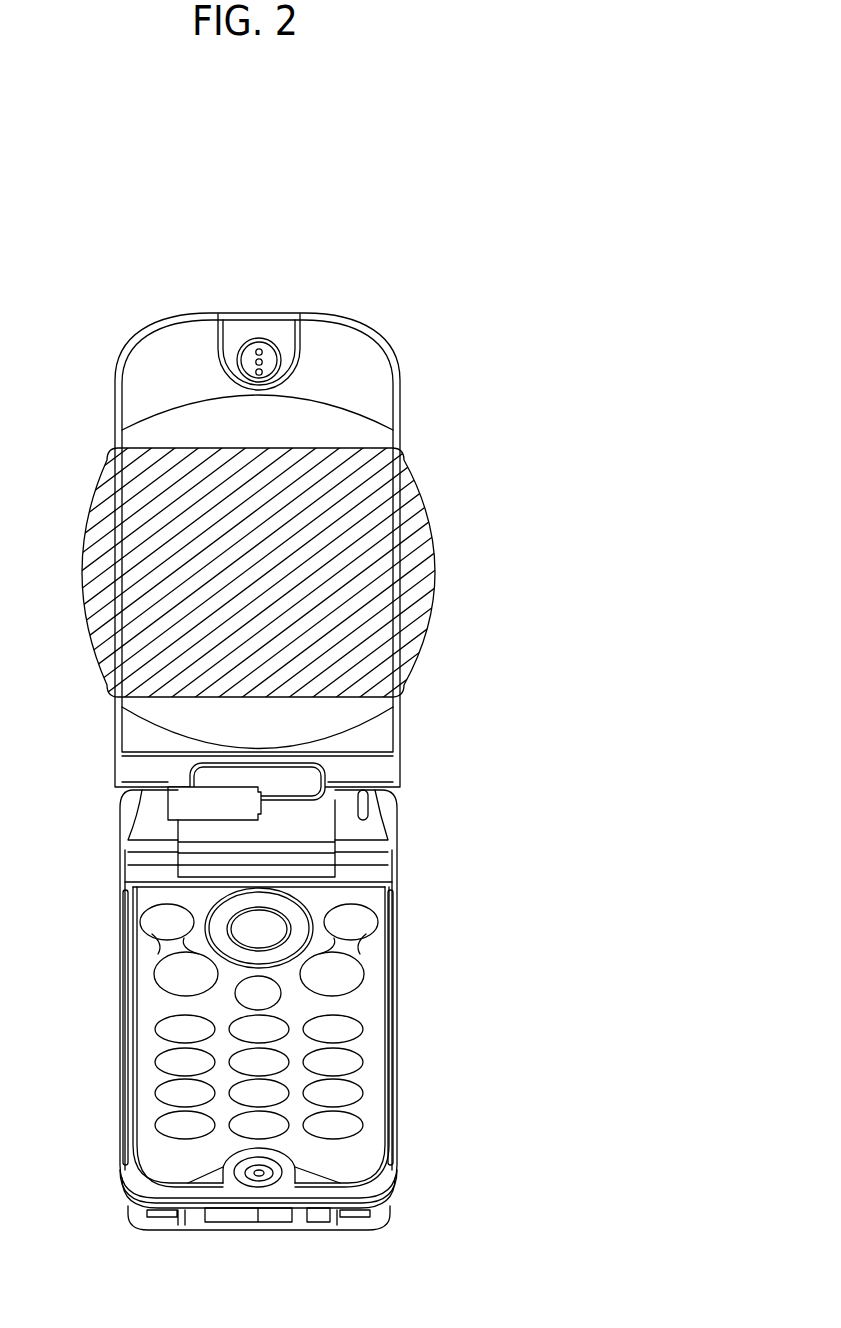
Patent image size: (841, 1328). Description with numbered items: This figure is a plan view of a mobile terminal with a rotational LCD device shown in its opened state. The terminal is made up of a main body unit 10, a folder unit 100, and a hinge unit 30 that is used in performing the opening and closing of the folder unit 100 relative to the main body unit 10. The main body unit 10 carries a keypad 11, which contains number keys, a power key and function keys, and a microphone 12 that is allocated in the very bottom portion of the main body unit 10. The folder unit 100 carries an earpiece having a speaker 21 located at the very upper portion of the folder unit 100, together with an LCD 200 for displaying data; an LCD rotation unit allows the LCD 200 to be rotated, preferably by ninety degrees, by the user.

The folder unit 100 is at (403, 342).
The speaker 21 is at (263, 361).
The LCD 200 is at (443, 558).
The hinge unit 30 is at (310, 780).
The main body unit 10 is at (415, 1017).
The keypad 11 is at (163, 1005).
The microphone 12 is at (265, 1176).